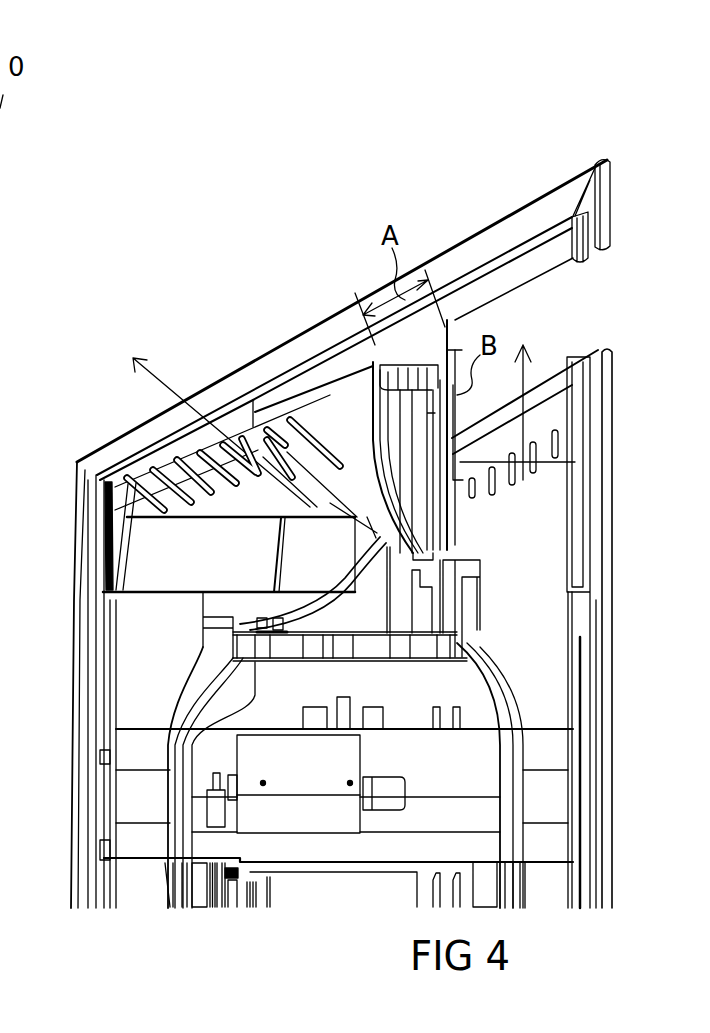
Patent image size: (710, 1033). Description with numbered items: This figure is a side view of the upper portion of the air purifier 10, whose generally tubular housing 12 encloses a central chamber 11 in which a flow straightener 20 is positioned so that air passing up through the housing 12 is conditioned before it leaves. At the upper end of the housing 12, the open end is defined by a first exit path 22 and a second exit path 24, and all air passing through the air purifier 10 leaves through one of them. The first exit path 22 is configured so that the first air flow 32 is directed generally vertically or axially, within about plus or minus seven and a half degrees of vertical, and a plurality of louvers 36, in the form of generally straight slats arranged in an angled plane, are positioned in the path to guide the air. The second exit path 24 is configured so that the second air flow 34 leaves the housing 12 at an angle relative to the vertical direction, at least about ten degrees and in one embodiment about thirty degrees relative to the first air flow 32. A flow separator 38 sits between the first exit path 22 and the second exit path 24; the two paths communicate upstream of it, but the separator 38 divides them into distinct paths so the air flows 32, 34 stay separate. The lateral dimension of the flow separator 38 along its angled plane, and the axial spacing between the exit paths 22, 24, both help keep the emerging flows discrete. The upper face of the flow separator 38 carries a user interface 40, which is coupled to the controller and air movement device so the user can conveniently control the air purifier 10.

The air purifier 10 is at (396, 133).
The central chamber 11 is at (140, 660).
The housing 12 is at (615, 597).
The flow straightener 20 is at (552, 667).
The first air flow exit path 22 is at (557, 489).
The second air flow exit path 24 is at (246, 520).
The first air flow 32 is at (460, 420).
The second air flow 34 is at (173, 388).
The louvers 36 is at (290, 430).
The flow separator 38 is at (458, 313).
The user interface 40 is at (458, 270).